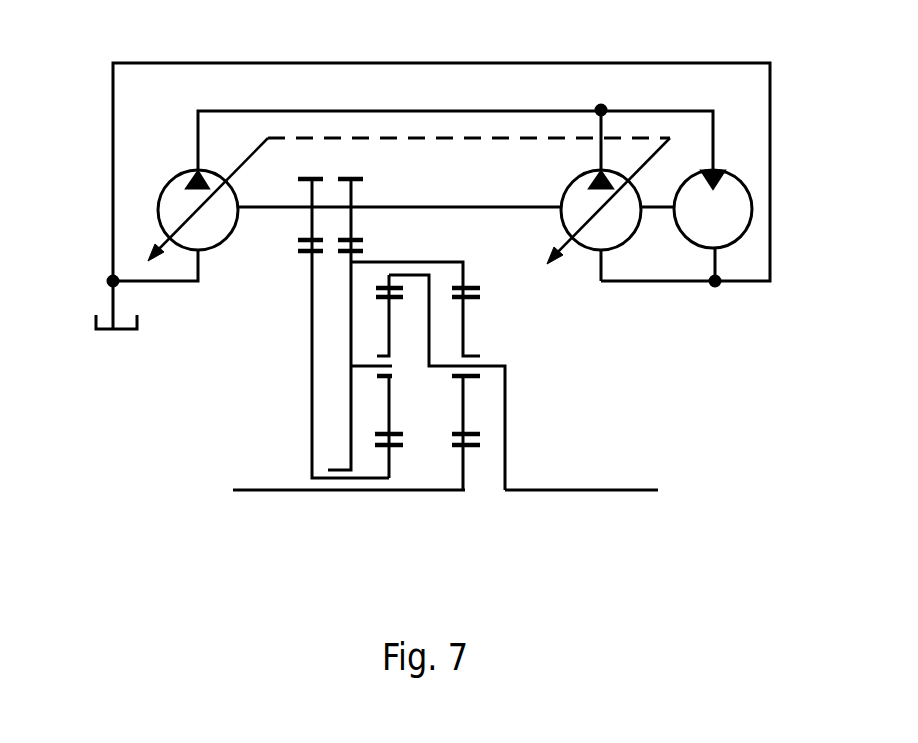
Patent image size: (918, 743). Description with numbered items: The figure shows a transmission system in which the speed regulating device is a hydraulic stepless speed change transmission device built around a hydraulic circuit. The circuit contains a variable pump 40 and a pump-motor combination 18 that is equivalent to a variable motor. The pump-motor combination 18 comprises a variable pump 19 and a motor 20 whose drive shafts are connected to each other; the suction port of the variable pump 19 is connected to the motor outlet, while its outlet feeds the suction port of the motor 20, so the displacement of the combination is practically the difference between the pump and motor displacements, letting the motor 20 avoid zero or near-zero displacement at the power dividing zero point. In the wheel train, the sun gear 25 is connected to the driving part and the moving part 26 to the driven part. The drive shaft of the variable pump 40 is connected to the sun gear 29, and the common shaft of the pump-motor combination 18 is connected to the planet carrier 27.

The pump-motor combination 18 is at (752, 370).
The variable pump 19 is at (564, 342).
The motor 20 is at (675, 342).
The variable pump 40 is at (215, 237).
The sun gear 29 is at (313, 398).
The planet carrier 27 is at (352, 398).
The sun gear 25 is at (405, 490).
The moving part 26 is at (602, 490).